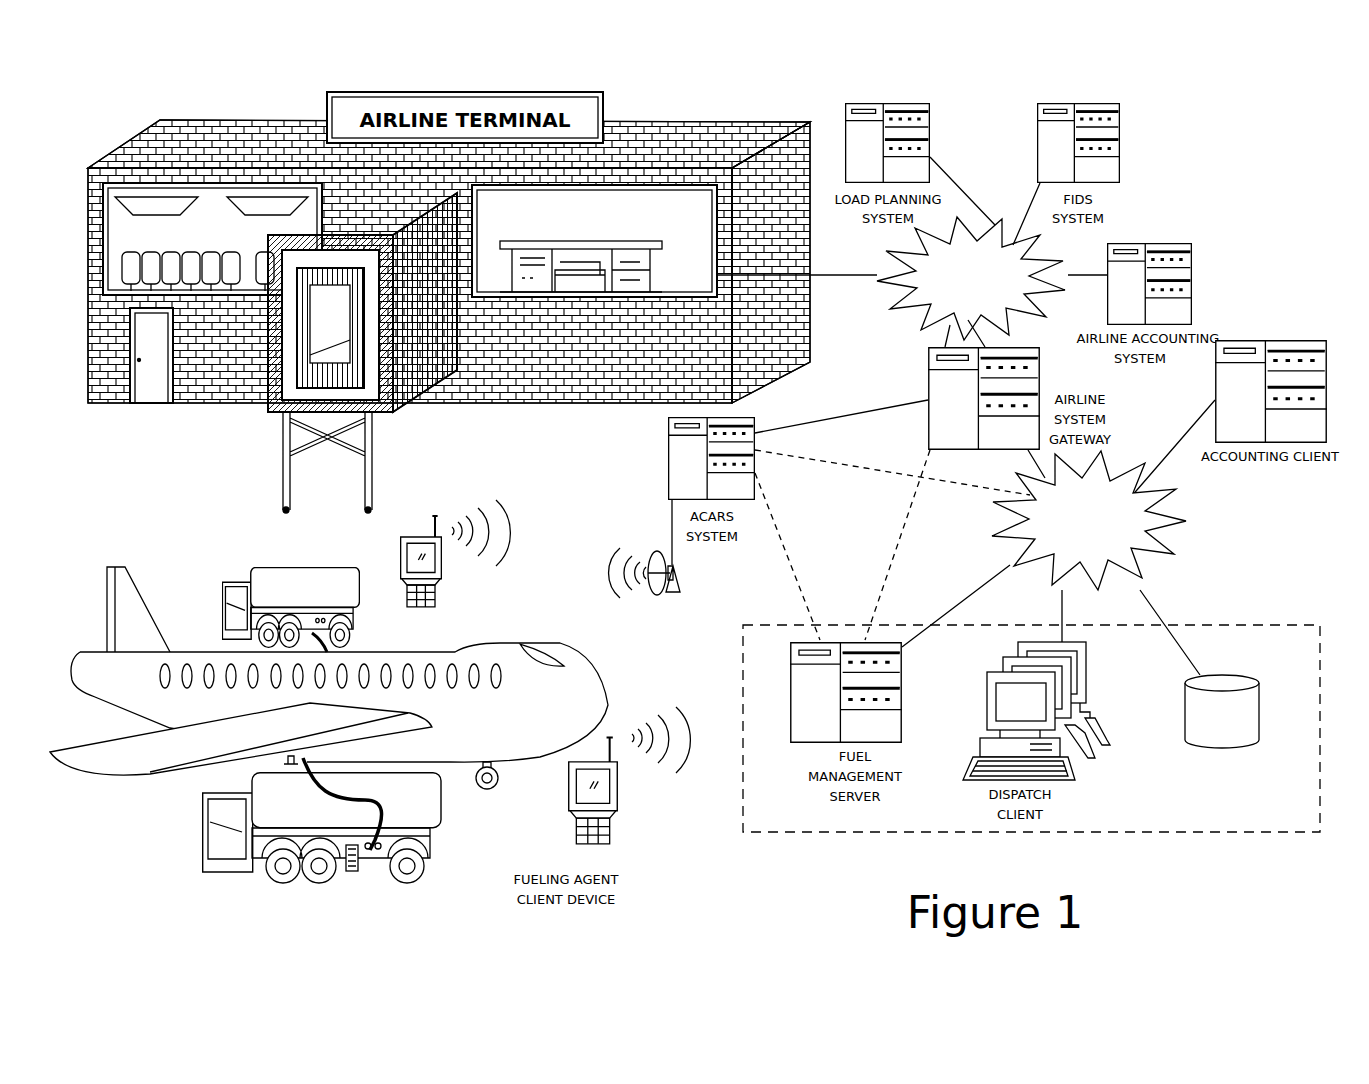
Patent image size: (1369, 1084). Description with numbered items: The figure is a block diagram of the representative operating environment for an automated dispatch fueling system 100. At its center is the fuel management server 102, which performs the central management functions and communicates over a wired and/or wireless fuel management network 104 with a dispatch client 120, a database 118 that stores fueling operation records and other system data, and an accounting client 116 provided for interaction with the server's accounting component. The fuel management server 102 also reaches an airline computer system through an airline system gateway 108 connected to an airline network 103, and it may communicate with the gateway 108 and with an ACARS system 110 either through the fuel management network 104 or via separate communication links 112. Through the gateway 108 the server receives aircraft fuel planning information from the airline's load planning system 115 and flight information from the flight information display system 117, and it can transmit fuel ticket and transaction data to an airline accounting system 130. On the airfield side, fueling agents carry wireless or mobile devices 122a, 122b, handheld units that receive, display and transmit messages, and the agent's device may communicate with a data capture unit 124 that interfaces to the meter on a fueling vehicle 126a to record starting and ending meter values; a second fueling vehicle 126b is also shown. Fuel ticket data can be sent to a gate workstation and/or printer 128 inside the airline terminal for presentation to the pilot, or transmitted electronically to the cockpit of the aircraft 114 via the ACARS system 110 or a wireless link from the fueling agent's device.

The automated dispatch fueling system 100 is at (1298, 605).
The fuel management server 102 is at (846, 692).
The airline network 103 is at (971, 278).
The fuel management network 104 is at (1089, 520).
The airline system gateway 108 is at (984, 398).
The ACARS system 110 is at (682, 507).
The separate communication links 112 is at (905, 531).
The aircraft 114 is at (329, 678).
The load planning system 115 is at (887, 143).
The accounting client 116 is at (1271, 391).
The flight information display system (FIDS) 117 is at (1078, 143).
The database 118 is at (1222, 711).
The dispatch client 120 is at (1036, 711).
The wireless or mobile device (fueling agent client device) 122a is at (578, 803).
The wireless or mobile device (fueling agent client device) 122b is at (404, 566).
The data capture unit (DCU) 124 is at (353, 872).
The fueling vehicle 126a is at (322, 838).
The fueling vehicle 126b is at (290, 610).
The gate workstation and/or printer 128 is at (556, 252).
The airline accounting system 130 is at (1149, 284).